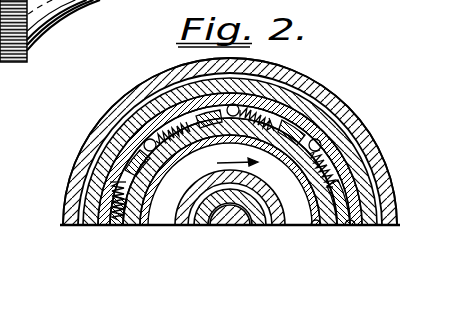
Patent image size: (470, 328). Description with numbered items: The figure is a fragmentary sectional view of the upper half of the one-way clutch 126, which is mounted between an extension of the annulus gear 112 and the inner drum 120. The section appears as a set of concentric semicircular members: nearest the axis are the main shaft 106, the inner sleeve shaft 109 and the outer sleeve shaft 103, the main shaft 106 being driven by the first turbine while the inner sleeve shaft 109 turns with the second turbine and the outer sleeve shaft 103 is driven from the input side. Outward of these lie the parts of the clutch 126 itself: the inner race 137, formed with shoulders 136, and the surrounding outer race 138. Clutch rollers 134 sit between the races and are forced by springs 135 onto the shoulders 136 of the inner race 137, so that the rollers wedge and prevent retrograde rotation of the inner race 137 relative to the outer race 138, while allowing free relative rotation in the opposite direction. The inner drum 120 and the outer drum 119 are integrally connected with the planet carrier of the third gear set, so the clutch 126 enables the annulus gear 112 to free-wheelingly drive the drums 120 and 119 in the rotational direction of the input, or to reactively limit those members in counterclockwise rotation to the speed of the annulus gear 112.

The outer sleeve shaft 103 is at (206, 215).
The main shaft 106 is at (216, 237).
The inner sleeve shaft 109 is at (256, 225).
The annulus gear 112 is at (82, 152).
The outer drum 119 is at (160, 80).
The inner drum 120 is at (262, 197).
The one-way clutch 126 is at (319, 137).
The clutch rollers 134 is at (216, 168).
The springs 135 is at (310, 143).
The shoulders 136 is at (258, 159).
The inner race 137 is at (283, 145).
The outer race 138 is at (350, 168).